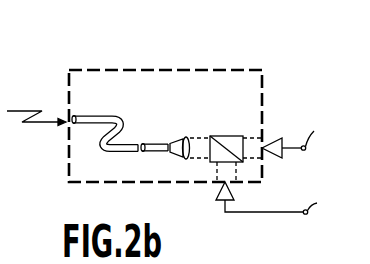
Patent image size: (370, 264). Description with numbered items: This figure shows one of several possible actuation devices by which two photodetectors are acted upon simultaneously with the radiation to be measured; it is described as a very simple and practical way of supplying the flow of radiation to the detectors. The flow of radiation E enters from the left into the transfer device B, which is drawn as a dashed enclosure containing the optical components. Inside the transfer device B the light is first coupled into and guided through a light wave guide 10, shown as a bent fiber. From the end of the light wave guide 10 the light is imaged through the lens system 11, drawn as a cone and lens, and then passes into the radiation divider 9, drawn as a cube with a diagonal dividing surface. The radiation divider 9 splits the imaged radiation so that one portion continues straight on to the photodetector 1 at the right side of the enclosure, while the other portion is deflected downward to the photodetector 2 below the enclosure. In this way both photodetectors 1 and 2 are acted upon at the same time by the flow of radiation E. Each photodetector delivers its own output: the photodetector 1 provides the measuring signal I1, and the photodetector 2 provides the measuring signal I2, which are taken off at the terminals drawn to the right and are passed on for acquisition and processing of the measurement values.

The transfer device B is at (100, 68).
The flow of radiation E is at (24, 106).
The light wave guide 10 is at (103, 116).
The lens system 11 is at (186, 137).
The radiation divider 9 is at (225, 136).
The photodetector 1 is at (270, 138).
The photodetector 2 is at (218, 186).
The measuring signal I1 is at (327, 126).
The measuring signal I2 is at (325, 200).